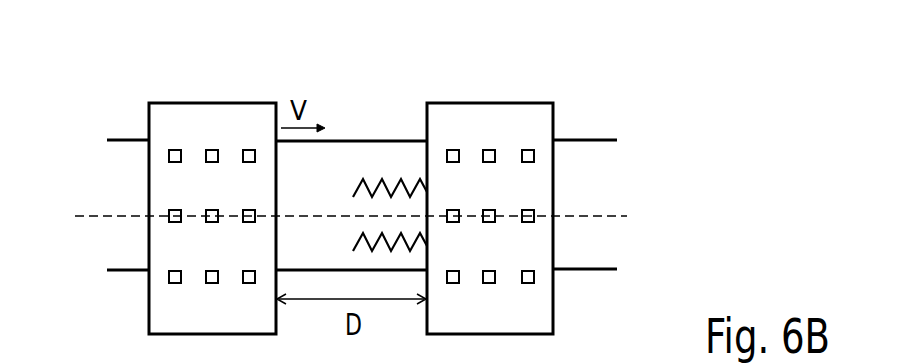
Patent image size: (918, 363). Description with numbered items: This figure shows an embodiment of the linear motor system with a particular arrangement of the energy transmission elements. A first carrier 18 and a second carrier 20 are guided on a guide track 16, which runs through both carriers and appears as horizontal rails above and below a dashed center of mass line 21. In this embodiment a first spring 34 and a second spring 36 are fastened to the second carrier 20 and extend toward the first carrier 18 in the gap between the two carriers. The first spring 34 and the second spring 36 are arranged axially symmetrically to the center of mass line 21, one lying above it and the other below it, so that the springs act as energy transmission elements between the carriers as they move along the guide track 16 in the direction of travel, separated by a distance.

The transport device 16 is at (110, 167).
The first module 18 is at (203, 123).
The second module 20 is at (502, 127).
The center line 21 is at (610, 215).
The first spring element 34 is at (353, 245).
The second spring element 36 is at (353, 190).